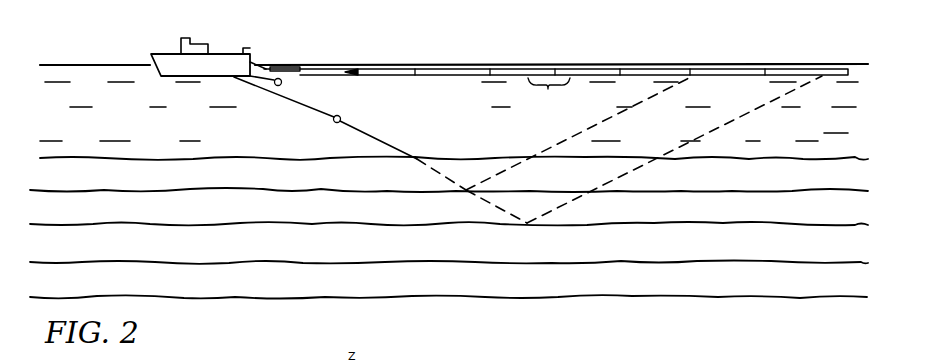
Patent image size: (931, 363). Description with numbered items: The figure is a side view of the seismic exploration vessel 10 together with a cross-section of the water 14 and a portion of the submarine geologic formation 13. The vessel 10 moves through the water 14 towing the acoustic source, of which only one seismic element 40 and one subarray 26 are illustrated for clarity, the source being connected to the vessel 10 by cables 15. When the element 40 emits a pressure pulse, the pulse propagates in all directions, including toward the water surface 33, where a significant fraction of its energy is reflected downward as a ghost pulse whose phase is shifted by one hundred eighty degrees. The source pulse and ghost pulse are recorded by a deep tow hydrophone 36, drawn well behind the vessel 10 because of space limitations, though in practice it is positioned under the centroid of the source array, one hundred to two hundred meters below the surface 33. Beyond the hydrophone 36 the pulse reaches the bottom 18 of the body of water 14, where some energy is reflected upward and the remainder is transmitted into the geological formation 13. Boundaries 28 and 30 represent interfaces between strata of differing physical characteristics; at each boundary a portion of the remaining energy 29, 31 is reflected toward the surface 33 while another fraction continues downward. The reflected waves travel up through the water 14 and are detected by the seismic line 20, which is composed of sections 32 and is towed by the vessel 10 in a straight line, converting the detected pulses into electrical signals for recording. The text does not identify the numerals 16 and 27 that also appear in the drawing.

The seismic exploration vessel 10 is at (168, 55).
The submarine geologic formation 13 is at (231, 152).
The water 14 is at (449, 111).
The cables 15 is at (259, 61).
The lead-in cable 16 is at (328, 70).
The bottom of the body of water 18 is at (279, 157).
The seismic line 20 is at (468, 57).
The subarray 26 is at (292, 67).
The source tow cable 27 is at (372, 132).
The boundary 28 is at (463, 192).
The reflected energy 29 is at (590, 130).
The boundary 30 is at (526, 226).
The reflected energy 31 is at (712, 132).
The sections 32 is at (549, 96).
The water surface 33 is at (107, 63).
The deep tow hydrophone 36 is at (333, 122).
The seismic element 40 is at (282, 83).